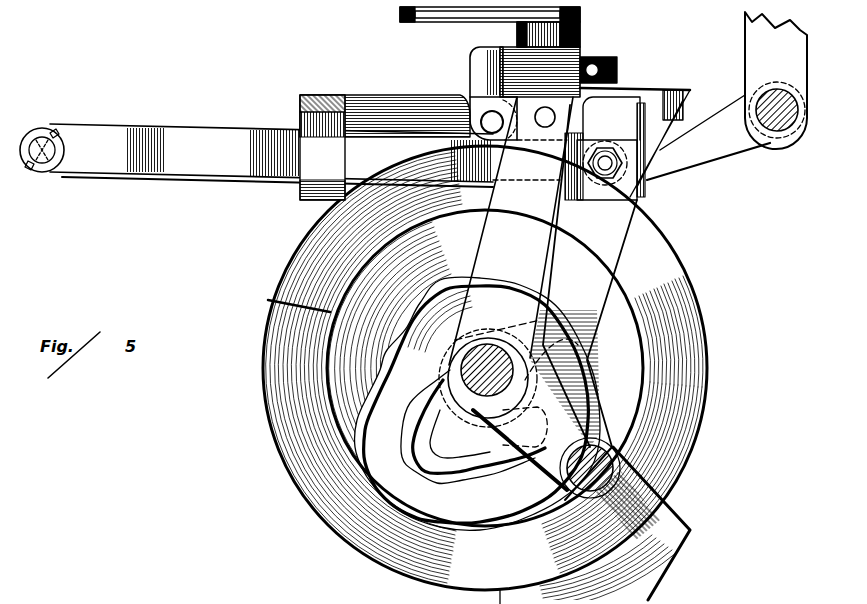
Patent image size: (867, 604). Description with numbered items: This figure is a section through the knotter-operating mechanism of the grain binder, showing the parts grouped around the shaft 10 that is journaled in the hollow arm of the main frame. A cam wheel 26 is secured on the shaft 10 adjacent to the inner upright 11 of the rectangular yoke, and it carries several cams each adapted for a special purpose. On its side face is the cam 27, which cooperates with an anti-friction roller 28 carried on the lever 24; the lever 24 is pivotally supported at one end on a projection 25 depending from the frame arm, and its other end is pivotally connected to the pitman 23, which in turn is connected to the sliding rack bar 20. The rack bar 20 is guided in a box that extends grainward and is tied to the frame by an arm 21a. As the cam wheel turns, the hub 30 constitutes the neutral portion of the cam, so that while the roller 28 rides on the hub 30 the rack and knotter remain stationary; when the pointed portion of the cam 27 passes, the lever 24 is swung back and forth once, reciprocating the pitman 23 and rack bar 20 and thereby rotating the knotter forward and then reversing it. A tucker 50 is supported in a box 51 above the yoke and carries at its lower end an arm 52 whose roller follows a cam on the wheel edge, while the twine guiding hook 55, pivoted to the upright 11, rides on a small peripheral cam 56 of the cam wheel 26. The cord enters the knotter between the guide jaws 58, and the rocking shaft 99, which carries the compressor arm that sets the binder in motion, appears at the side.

The shaft 10 is at (470, 395).
The inner upright 11 is at (511, 231).
The sliding rack bar 20 is at (225, 180).
The arm 21a is at (300, 108).
The pitman 23 is at (271, 155).
The lever 24 is at (583, 276).
The projection 25 is at (588, 500).
The cam wheel 26 is at (464, 376).
The cam 27 is at (473, 433).
The anti-friction roller 28 is at (585, 372).
The hub 30 is at (452, 350).
The tucker 50 is at (445, 22).
The box 51 is at (580, 42).
The arm 52 is at (608, 146).
The twine guiding hook 55 is at (480, 68).
The peripheral cam 56 is at (612, 596).
The guide jaws 58 is at (485, 375).
The rocking shaft 99 is at (790, 130).